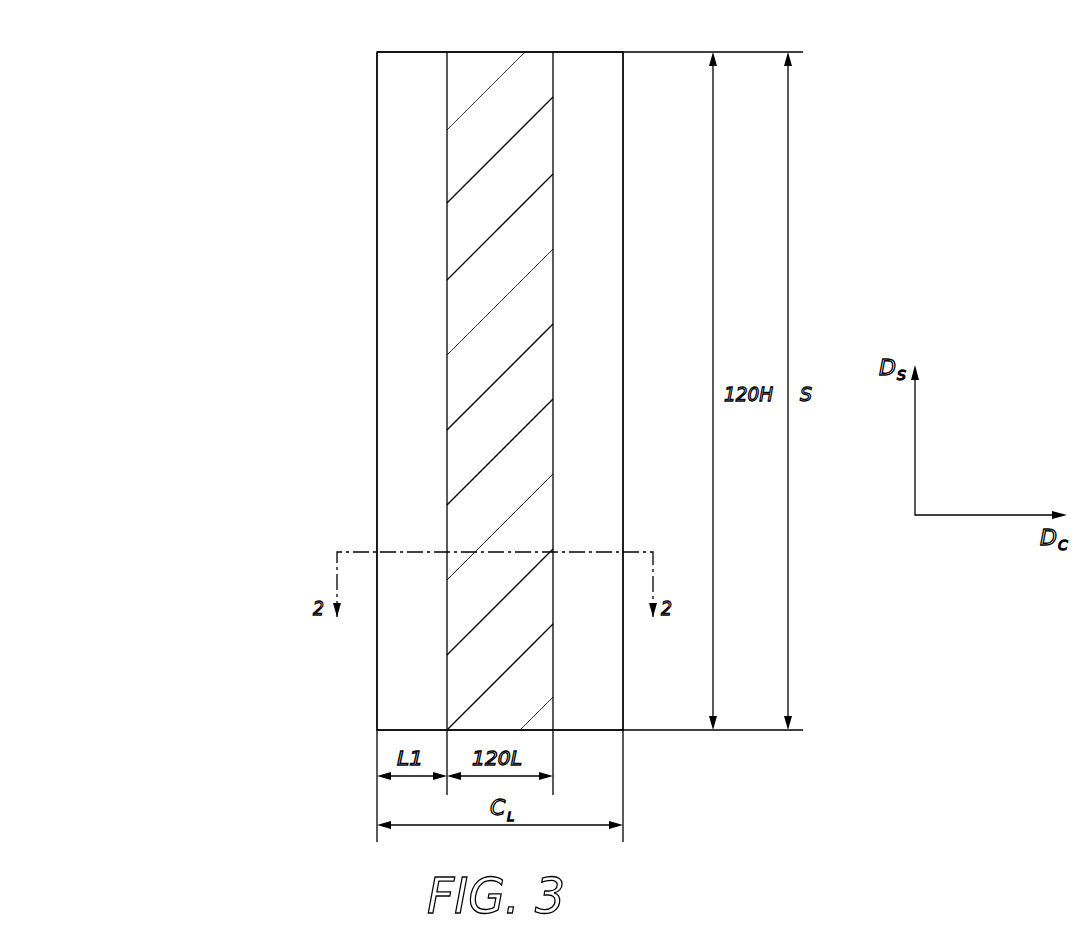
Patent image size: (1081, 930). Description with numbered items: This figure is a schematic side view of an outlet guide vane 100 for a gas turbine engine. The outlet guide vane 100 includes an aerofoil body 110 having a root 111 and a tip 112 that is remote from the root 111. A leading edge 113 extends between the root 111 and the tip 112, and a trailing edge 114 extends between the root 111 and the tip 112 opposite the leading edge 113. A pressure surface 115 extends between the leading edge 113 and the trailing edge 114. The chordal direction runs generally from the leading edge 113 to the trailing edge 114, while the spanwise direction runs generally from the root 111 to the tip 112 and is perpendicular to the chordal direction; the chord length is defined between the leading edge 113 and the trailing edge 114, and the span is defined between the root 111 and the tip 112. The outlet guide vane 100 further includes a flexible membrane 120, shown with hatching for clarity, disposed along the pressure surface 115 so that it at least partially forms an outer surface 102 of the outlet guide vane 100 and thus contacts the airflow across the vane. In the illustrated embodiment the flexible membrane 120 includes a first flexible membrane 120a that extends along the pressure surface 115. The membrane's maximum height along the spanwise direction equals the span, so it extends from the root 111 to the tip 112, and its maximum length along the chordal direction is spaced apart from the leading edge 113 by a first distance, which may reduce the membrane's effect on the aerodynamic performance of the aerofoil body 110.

The outlet guide vane 100 is at (828, 38).
The outer surface 102 is at (494, 100).
The aerofoil body 110 is at (341, 441).
The root 111 is at (585, 732).
The tip 112 is at (412, 52).
The leading edge 113 is at (377, 137).
The trailing edge 114 is at (623, 87).
The pressure surface 115 is at (410, 312).
The flexible membrane 120 is at (276, 365).
The first flexible membrane 120a is at (472, 232).